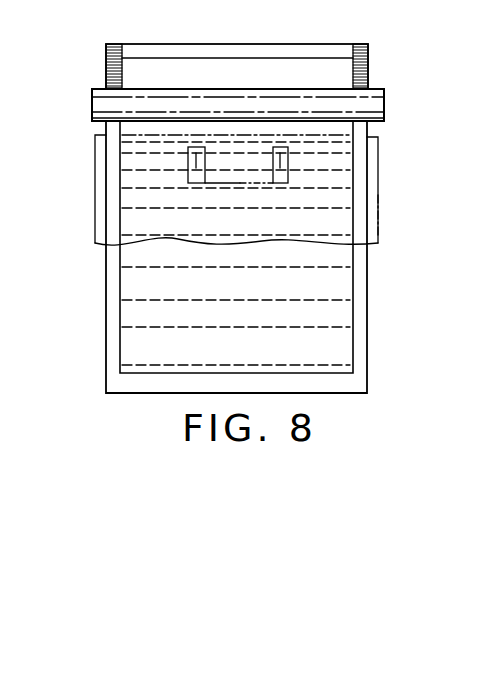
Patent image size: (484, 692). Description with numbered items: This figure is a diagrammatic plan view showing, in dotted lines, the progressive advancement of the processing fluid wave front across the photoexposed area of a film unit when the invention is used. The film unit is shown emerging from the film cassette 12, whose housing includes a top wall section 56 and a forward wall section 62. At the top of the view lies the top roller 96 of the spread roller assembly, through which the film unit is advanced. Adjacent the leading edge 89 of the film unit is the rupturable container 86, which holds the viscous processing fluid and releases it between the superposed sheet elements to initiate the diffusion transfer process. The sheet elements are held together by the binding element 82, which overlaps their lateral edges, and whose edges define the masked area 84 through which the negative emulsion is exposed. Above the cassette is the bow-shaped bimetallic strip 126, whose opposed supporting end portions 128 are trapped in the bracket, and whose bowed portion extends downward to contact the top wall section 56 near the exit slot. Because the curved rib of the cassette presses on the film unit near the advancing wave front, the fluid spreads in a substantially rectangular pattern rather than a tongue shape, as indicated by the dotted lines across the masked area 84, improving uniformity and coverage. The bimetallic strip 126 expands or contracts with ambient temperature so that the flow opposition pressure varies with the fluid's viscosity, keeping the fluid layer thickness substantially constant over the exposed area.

The film cassette 12 is at (380, 209).
The top wall section 56 is at (378, 152).
The forward wall section 62 is at (97, 140).
The binding element 82 is at (358, 292).
The masked area 84 is at (120, 345).
The rupturable container 86 is at (368, 70).
The leading edge 89 is at (285, 44).
The top roller 96 is at (384, 107).
The bimetallic strip 126 is at (243, 183).
The supporting end portions 128 is at (192, 175).